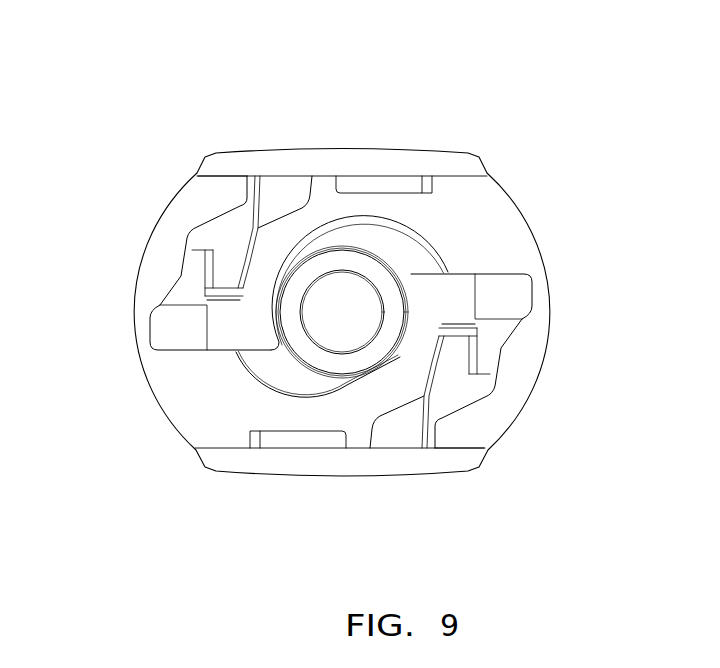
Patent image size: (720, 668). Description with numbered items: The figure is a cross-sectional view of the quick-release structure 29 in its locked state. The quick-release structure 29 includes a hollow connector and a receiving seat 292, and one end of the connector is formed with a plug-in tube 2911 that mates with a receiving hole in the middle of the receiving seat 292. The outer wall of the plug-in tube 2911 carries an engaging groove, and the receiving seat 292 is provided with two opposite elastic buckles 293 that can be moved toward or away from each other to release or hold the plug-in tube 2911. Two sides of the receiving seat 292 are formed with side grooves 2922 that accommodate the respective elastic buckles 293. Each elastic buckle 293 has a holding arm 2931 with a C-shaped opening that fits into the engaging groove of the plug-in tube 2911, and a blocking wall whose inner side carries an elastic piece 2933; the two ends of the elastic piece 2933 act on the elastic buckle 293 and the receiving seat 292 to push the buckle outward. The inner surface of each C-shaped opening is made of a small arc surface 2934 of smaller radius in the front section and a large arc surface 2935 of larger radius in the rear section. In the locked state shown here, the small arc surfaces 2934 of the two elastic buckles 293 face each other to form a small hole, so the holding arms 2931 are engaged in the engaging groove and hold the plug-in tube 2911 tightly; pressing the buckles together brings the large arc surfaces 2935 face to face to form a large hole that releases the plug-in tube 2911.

The quick-release structure 29 is at (332, 287).
The receiving seat 292 is at (433, 162).
The elastic buckle 293 is at (507, 235).
The plug-in tube 2911 is at (345, 373).
The side groove 2922 is at (237, 230).
The holding arm 2931 is at (357, 210).
The elastic piece 2933 is at (187, 327).
The small arc surface 2934 is at (243, 268).
The large arc surface 2935 is at (423, 243).